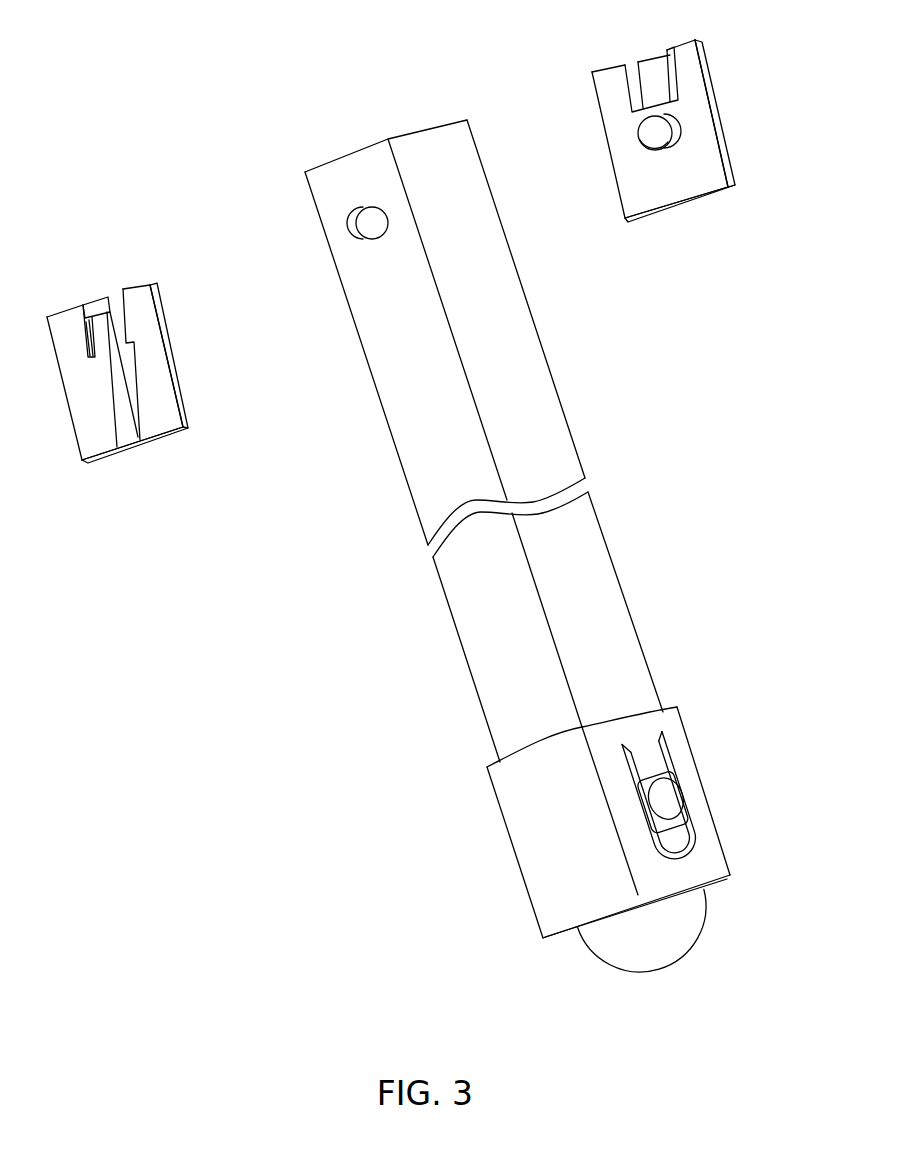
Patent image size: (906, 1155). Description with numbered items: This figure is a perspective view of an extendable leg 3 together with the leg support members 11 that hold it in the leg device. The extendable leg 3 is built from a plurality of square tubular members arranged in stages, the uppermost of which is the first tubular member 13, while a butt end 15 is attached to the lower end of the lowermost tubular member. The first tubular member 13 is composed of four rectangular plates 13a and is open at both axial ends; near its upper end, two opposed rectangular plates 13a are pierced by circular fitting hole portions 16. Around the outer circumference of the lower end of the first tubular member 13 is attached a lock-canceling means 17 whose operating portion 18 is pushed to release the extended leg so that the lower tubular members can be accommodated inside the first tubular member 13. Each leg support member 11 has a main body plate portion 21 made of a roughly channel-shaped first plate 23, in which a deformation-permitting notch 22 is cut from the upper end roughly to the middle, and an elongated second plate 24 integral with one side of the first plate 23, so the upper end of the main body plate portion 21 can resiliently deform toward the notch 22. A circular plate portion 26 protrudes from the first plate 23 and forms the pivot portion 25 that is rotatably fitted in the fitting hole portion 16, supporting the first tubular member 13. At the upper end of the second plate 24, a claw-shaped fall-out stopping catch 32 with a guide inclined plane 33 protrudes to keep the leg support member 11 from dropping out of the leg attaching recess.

The extendable leg 3 is at (507, 554).
The leg support member 11 is at (174, 295).
The first tubular member 13 is at (553, 442).
The rectangular plate 13a is at (333, 168).
The butt end 15 is at (657, 955).
The fitting hole portion 16 is at (368, 223).
The lock-canceling means 17 is at (688, 737).
The operating portion 18 is at (672, 802).
The main body plate portion 21 is at (167, 423).
The deformation-permitting notch 22 is at (119, 303).
The first plate 23 is at (167, 385).
The second plate 24 is at (122, 424).
The pivot portion 25 is at (652, 147).
The circular plate portion 26 is at (660, 133).
The fall-out stopping catch 32 is at (92, 307).
The guide inclined plane 33 is at (84, 306).